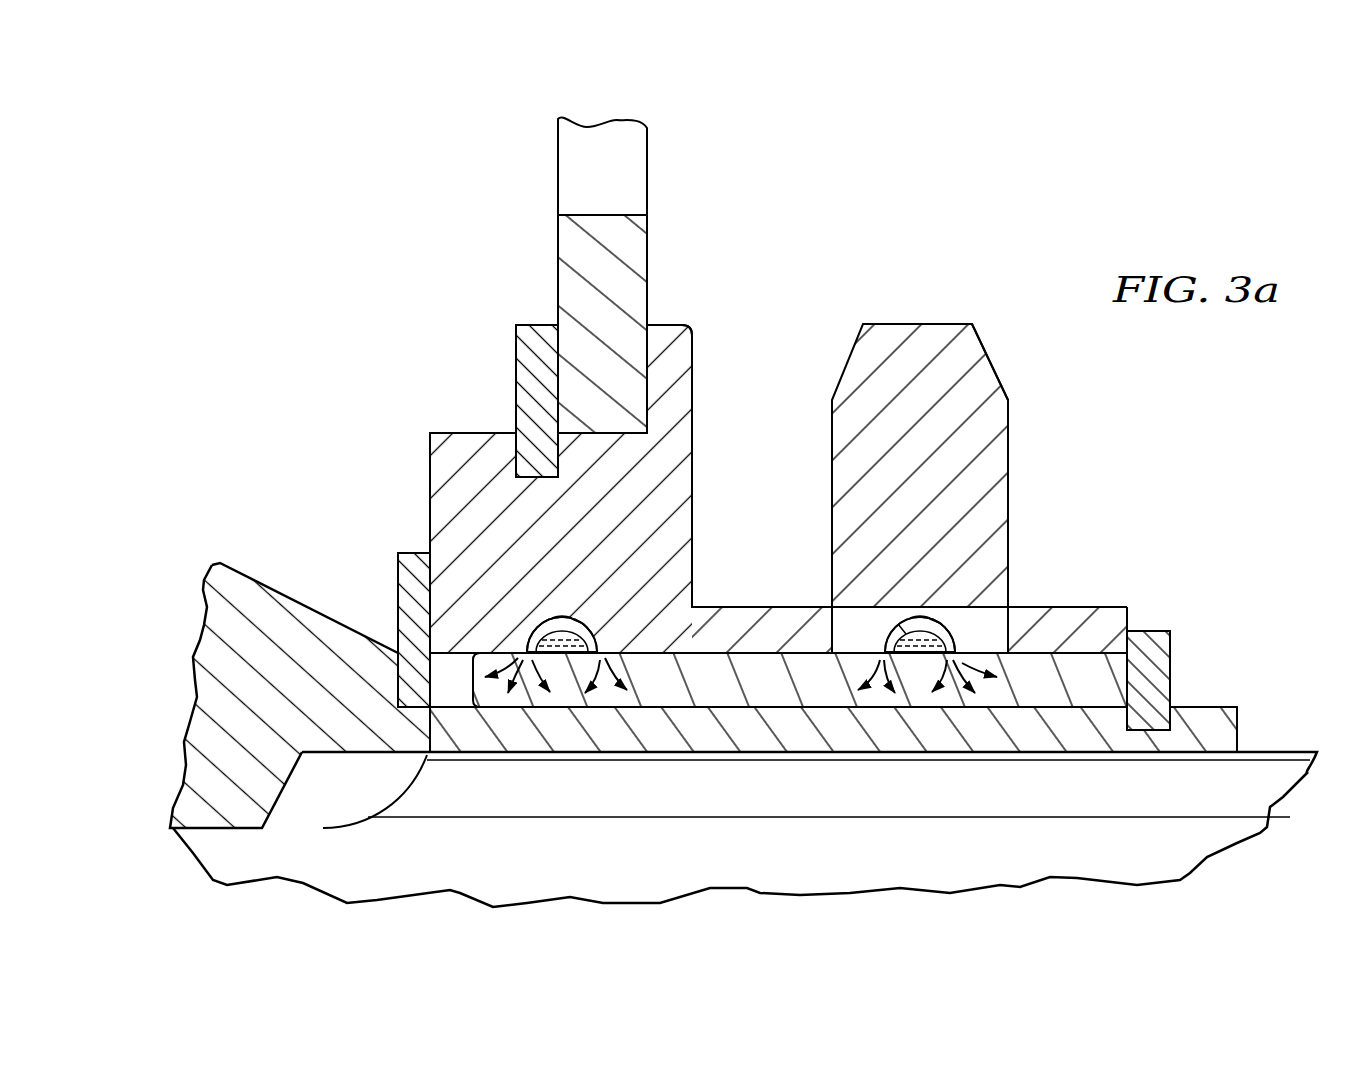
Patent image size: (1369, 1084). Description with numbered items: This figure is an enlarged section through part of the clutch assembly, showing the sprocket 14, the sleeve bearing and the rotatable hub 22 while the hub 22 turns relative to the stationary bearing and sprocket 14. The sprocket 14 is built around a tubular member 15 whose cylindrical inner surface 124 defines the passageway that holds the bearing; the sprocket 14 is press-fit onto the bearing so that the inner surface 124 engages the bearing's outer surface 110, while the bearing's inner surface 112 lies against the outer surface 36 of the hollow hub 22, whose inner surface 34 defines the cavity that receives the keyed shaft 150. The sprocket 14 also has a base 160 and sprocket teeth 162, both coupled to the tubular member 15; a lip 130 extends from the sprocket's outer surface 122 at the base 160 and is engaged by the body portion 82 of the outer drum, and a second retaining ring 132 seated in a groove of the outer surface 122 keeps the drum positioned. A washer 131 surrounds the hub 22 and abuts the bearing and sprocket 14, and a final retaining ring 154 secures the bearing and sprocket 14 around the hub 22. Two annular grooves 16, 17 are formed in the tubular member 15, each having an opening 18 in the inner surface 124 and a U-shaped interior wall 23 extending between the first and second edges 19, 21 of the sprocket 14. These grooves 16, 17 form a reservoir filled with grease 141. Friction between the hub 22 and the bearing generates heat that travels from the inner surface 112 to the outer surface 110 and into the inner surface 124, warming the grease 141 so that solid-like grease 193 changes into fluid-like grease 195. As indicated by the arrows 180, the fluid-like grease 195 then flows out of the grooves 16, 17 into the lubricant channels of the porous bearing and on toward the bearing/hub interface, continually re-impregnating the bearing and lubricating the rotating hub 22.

The sprocket 14 is at (1013, 445).
The tubular member 15 is at (745, 612).
The annular groove 16 is at (528, 630).
The annular groove 17 is at (960, 628).
The opening 18 is at (558, 662).
The first edge 19 is at (520, 650).
The second edge 21 is at (600, 650).
The rotatable hub 22 is at (193, 675).
The U-shaped interior wall 23 is at (562, 617).
The inner surface 34 is at (637, 753).
The outer surface 36 is at (759, 707).
The body portion 82 is at (567, 243).
The outer surface 110 is at (1110, 650).
The inner surface 112 is at (507, 707).
The outer surface 122 is at (933, 322).
The cylindrical inner surface 124 is at (1032, 652).
The lip 130 is at (682, 342).
The washer 131 is at (398, 582).
The second retaining ring 132 is at (515, 367).
The grease 141 is at (540, 618).
The keyed shaft 150 is at (1266, 848).
The final retaining ring 154 is at (1143, 630).
The base 160 is at (430, 462).
The sprocket teeth 162 is at (975, 374).
The arrows 180 is at (868, 666).
The solid-like grease 193 is at (582, 623).
The fluid-like grease 195 is at (590, 632).